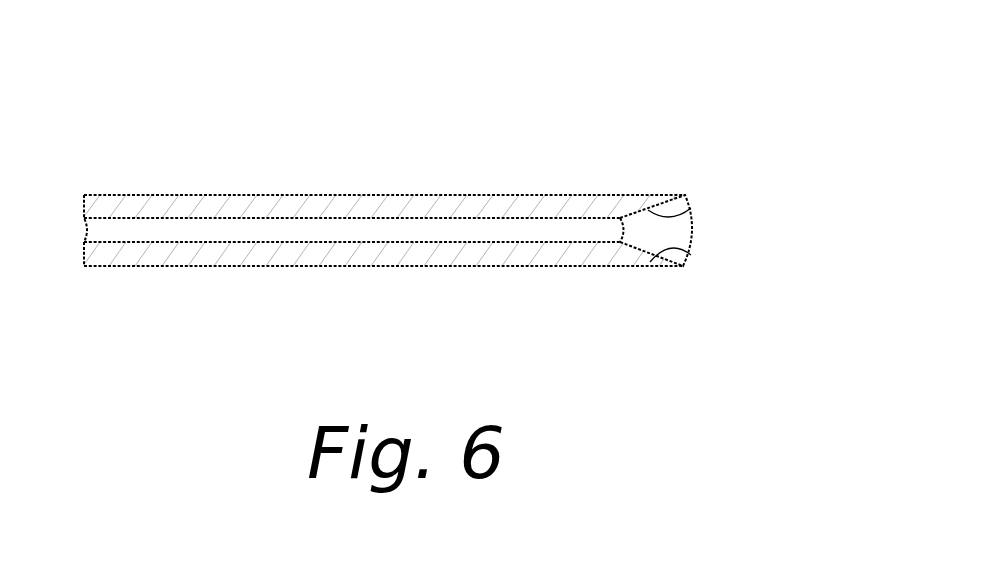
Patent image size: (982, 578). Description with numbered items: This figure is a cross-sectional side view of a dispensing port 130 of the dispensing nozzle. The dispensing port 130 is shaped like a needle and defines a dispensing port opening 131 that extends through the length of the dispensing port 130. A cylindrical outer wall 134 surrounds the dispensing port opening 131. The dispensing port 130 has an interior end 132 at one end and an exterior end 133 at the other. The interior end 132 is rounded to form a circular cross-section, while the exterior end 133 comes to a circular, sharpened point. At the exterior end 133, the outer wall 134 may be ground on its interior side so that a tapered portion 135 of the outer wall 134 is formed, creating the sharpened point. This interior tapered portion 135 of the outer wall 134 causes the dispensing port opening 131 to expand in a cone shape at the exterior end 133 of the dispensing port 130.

The dispensing port 130 is at (410, 220).
The dispensing port opening 131 is at (623, 253).
The interior end 132 is at (65, 306).
The exterior end 133 is at (660, 164).
The cylindrical outer wall 134 is at (421, 207).
The tapered portion 135 is at (691, 208).